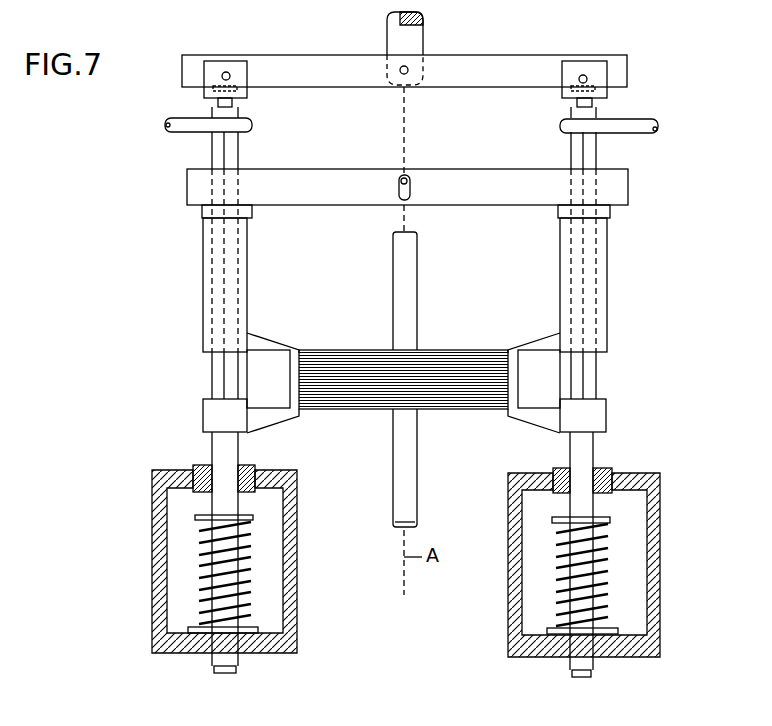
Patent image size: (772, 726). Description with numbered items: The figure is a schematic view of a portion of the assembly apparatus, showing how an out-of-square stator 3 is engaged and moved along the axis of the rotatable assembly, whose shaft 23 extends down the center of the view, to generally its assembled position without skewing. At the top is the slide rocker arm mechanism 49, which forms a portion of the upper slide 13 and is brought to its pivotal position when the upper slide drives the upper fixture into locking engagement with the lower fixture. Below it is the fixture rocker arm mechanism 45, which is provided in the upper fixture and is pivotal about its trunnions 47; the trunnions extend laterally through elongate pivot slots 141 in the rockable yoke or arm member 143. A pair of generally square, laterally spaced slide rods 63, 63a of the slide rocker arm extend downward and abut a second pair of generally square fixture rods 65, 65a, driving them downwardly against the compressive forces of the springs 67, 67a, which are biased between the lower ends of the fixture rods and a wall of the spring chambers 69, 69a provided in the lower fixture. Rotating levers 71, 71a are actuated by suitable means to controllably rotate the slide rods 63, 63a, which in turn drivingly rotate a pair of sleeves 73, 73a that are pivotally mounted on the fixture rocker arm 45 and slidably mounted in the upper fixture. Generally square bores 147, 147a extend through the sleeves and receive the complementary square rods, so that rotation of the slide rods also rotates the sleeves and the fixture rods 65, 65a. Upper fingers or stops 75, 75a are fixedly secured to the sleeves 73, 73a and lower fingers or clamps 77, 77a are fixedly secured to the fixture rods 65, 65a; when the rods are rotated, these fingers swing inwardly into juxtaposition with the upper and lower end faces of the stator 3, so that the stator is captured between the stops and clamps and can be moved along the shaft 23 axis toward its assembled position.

The stator 3 is at (336, 394).
The upper slide 13 is at (392, 30).
The shaft 23 is at (415, 277).
The fixture rocker arm mechanism 45 is at (407, 168).
The trunnions 47 is at (410, 180).
The slide rocker arm mechanism 49 is at (462, 50).
The slide rod 63 is at (218, 150).
The slide rod 63a is at (590, 160).
The fixture rod 65 is at (210, 446).
The fixture rod 65a is at (594, 453).
The spring 67 is at (243, 560).
The spring 67a is at (602, 575).
The spring chamber 69 is at (297, 592).
The spring chamber 69a is at (508, 600).
The rotating lever 71 is at (166, 125).
The rotating lever 71a is at (658, 130).
The sleeve 73 is at (203, 306).
The sleeve 73a is at (607, 302).
The upper finger or stop 75 is at (268, 337).
The upper finger or stop 75a is at (526, 344).
The lower finger or clamp 77 is at (270, 417).
The lower finger or clamp 77a is at (534, 419).
The elongate pivot slot 141 is at (399, 190).
The yoke or arm member 143 is at (303, 176).
The square bore 147 is at (212, 247).
The square bore 147a is at (601, 254).